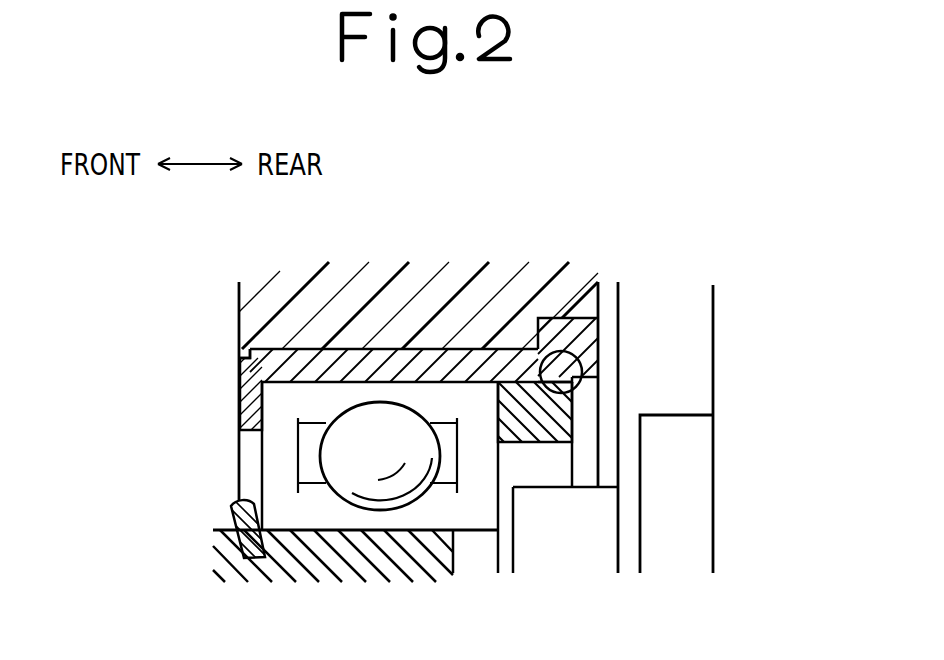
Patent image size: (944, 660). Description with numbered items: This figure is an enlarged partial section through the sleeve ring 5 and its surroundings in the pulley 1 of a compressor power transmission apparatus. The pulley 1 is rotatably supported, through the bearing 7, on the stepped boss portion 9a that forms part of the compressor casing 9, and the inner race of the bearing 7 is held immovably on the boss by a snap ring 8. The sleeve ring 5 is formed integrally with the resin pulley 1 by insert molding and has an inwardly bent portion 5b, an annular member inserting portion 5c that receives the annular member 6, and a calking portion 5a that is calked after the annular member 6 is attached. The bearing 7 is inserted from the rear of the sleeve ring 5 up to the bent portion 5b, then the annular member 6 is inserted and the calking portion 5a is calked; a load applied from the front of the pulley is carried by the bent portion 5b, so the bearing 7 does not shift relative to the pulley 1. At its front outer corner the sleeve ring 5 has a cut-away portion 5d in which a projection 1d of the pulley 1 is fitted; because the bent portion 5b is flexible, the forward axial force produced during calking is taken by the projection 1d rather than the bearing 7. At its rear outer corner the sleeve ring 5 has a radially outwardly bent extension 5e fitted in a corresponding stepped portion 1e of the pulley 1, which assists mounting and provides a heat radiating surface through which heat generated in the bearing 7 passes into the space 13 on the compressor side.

The pulley 1 is at (422, 322).
The projection 1d is at (239, 352).
The stepped portion 1e is at (549, 319).
The sleeve ring 5 is at (460, 350).
The calking portion 5a is at (557, 362).
The bent portion 5b is at (240, 397).
The annular member inserting portion 5c is at (601, 411).
The cut-away portion 5d is at (240, 371).
The extension 5e is at (575, 353).
The annular member 6 is at (545, 427).
The bearing 7 is at (350, 487).
The snap ring 8 is at (232, 507).
The casing 9 is at (592, 555).
The stepped boss portion 9a is at (428, 554).
The space 13 is at (608, 423).